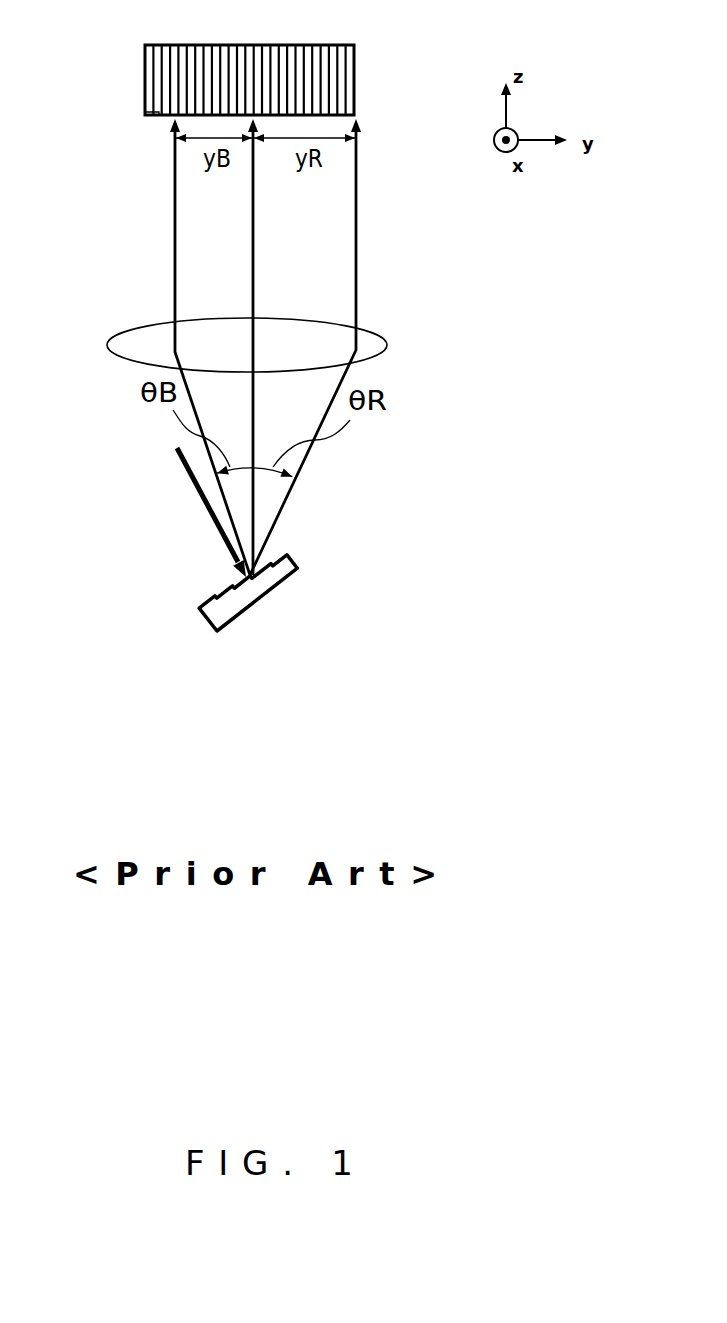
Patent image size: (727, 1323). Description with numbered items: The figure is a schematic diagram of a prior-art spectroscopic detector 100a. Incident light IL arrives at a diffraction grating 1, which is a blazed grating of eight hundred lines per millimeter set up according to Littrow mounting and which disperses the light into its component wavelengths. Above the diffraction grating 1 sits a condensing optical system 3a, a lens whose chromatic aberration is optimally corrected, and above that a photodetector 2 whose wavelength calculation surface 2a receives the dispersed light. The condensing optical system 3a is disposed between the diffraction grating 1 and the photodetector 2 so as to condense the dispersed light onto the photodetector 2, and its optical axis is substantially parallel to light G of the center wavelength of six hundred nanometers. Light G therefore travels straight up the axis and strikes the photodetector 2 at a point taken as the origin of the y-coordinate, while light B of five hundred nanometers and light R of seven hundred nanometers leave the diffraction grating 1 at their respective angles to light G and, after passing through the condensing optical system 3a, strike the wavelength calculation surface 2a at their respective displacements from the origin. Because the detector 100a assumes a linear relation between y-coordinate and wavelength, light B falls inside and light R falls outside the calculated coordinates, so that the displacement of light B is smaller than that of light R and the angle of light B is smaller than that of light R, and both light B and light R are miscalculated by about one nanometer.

The spectroscopic detector 100a is at (458, 33).
The photodetector 2 is at (354, 78).
The wavelength calculation surface 2a is at (160, 115).
The condensing optical system 3a is at (380, 352).
The diffraction grating 1 is at (257, 597).
The incident light IL is at (195, 493).
The light B is at (175, 225).
The light G is at (253, 305).
The light R is at (356, 195).